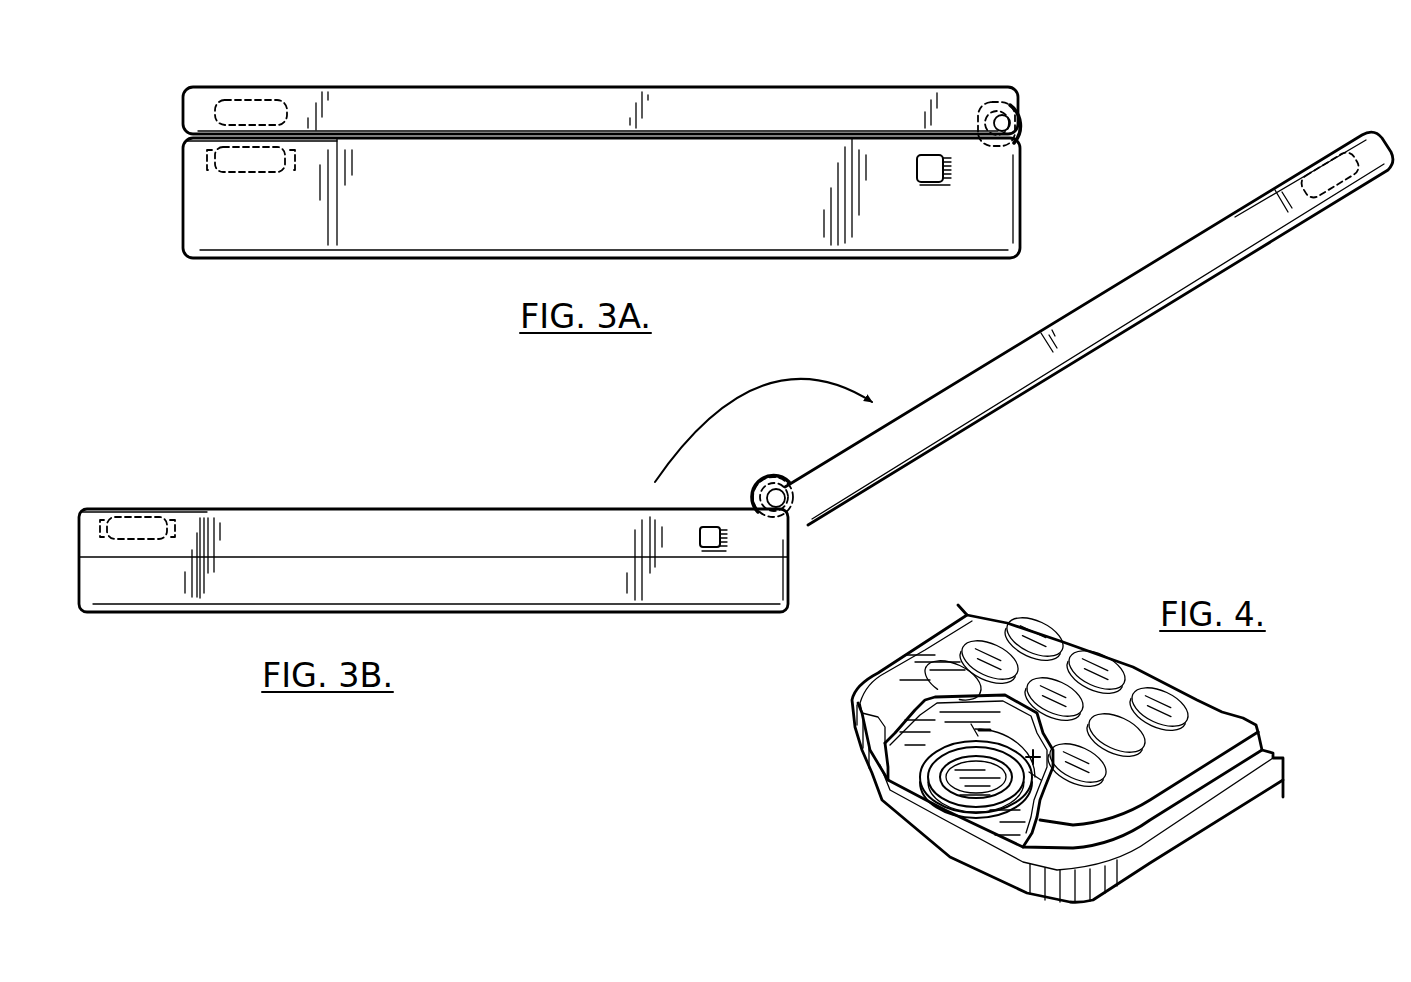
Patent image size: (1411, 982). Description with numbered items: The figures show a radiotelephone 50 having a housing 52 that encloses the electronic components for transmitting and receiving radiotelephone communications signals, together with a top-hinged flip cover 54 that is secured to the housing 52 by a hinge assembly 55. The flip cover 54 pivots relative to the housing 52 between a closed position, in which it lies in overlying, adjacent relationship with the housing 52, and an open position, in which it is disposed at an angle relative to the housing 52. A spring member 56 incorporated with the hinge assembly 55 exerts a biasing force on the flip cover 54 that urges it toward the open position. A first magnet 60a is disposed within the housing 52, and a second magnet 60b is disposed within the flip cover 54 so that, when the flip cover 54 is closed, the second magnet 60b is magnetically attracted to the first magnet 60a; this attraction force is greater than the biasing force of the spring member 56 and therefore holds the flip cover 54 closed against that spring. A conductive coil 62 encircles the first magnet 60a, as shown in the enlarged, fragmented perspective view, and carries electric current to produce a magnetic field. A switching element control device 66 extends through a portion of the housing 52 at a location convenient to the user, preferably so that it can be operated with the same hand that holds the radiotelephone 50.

In FIG. 3A, the radiotelephone 50 is at (536, 67).
In FIG. 3A, the housing 52 is at (378, 220).
In FIG. 3B, the housing 52 is at (520, 588).
In FIG. 3A, the flip cover 54 is at (747, 93).
In FIG. 3B, the flip cover 54 is at (986, 367).
In FIG. 3A, the hinge assembly 55 is at (1030, 130).
In FIG. 3B, the hinge assembly 55 is at (770, 478).
In FIG. 3A, the spring member 56 is at (999, 102).
In FIG. 3B, the spring member 56 is at (800, 505).
In FIG. 3A, the first magnet 60a is at (232, 172).
In FIG. 3B, the first magnet 60a is at (140, 517).
In FIG. 4, the first magnet 60a is at (958, 777).
In FIG. 3A, the second magnet 60b is at (263, 114).
In FIG. 3B, the second magnet 60b is at (1318, 170).
In FIG. 3A, the conductive coil 62 is at (207, 158).
In FIG. 3B, the conductive coil 62 is at (100, 523).
In FIG. 4, the conductive coil 62 is at (976, 810).
In FIG. 3A, the switching element control device 66 is at (937, 167).
In FIG. 3B, the switching element control device 66 is at (714, 530).